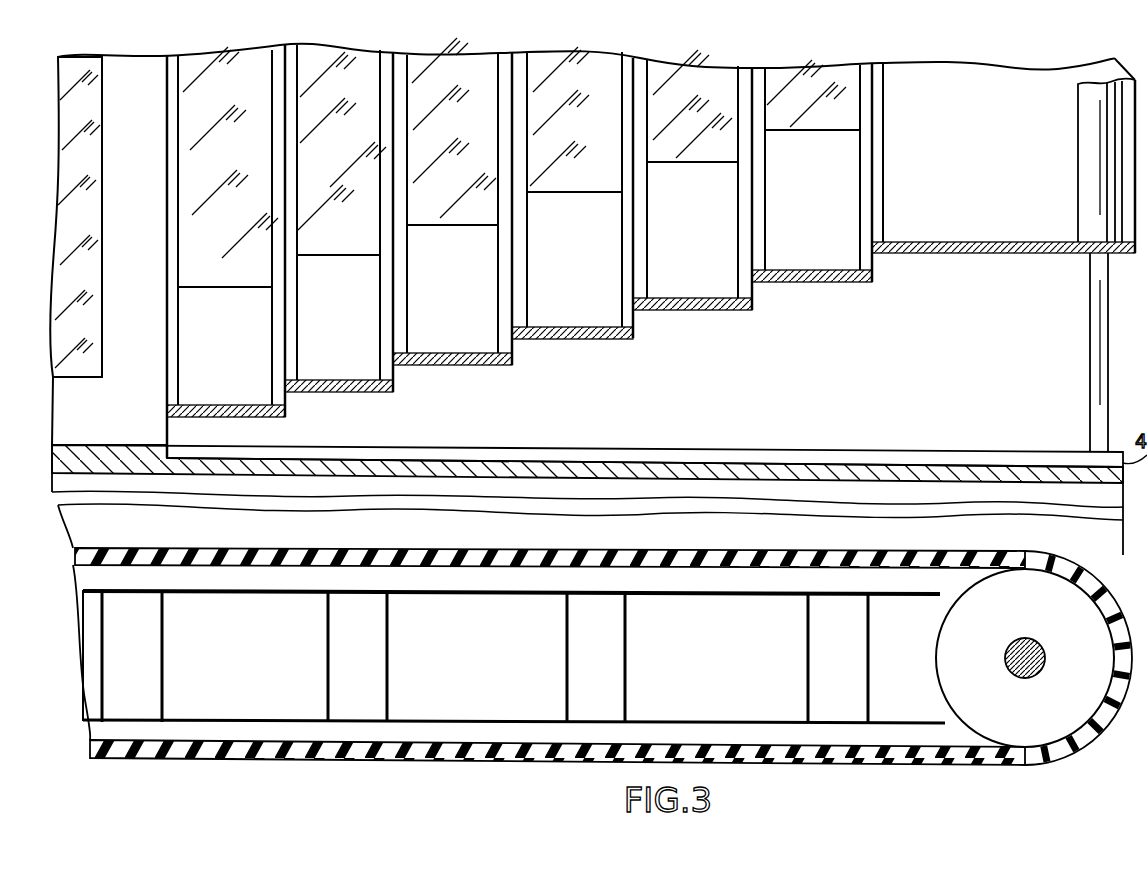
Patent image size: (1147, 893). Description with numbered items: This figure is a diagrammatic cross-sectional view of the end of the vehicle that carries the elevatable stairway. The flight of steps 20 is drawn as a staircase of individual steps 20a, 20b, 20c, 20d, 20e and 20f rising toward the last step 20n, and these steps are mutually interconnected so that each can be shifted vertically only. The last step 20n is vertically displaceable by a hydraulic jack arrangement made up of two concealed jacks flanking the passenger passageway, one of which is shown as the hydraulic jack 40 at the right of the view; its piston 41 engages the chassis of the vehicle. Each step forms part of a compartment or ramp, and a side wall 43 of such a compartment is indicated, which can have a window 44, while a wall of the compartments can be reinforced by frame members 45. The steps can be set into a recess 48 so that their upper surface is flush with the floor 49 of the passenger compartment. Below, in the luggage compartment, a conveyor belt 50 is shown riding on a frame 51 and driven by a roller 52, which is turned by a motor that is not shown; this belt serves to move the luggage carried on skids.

The flight of steps 20 is at (689, 366).
The step 20a is at (287, 416).
The step 20b is at (379, 393).
The step 20c is at (461, 366).
The step 20d is at (576, 339).
The step 20e is at (692, 199).
The step 20f is at (812, 191).
The last step 20n is at (989, 254).
The hydraulic jack 40 is at (1088, 146).
The piston 41 is at (1100, 328).
The side wall 43 is at (820, 222).
The window 44 is at (820, 131).
The frame members 45 is at (742, 247).
The recess 48 is at (178, 452).
The floor 49 is at (73, 445).
The conveyor belt 50 is at (539, 553).
The frame 51 is at (457, 591).
The roller 52 is at (1052, 722).